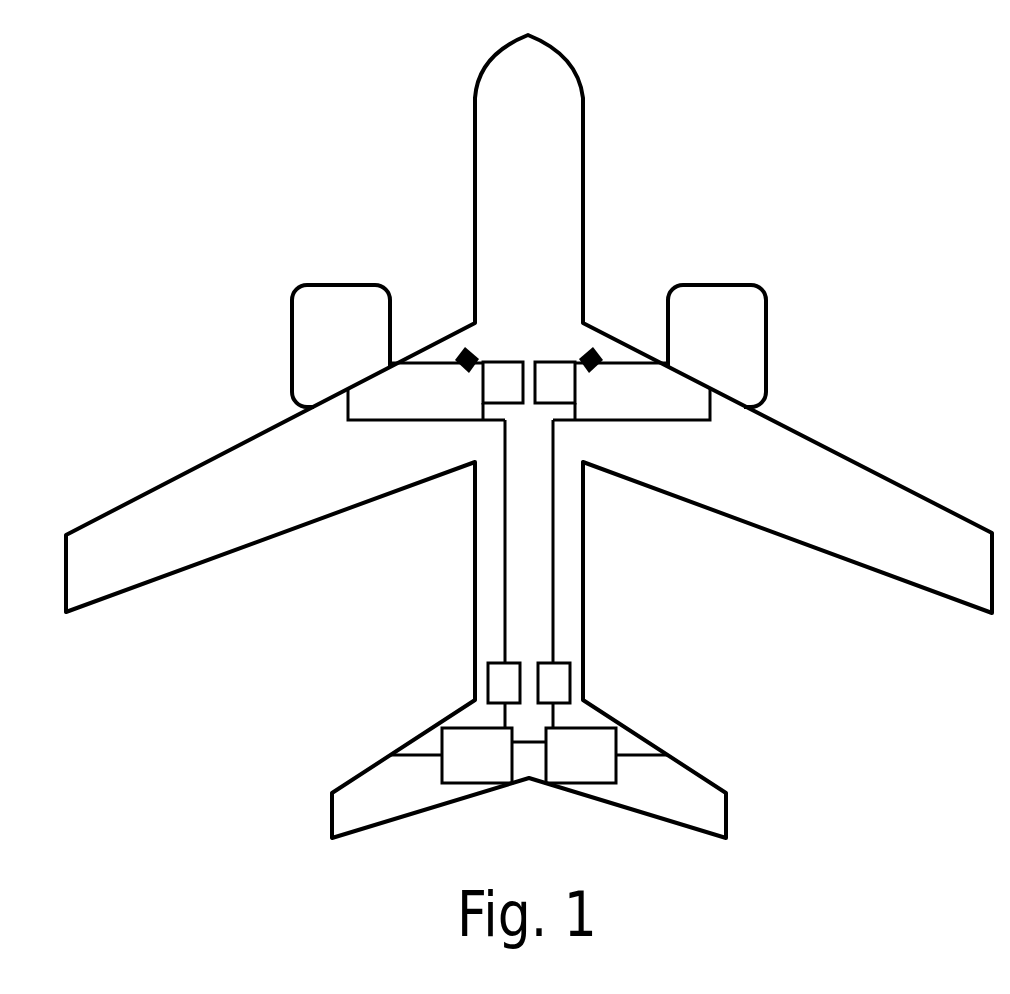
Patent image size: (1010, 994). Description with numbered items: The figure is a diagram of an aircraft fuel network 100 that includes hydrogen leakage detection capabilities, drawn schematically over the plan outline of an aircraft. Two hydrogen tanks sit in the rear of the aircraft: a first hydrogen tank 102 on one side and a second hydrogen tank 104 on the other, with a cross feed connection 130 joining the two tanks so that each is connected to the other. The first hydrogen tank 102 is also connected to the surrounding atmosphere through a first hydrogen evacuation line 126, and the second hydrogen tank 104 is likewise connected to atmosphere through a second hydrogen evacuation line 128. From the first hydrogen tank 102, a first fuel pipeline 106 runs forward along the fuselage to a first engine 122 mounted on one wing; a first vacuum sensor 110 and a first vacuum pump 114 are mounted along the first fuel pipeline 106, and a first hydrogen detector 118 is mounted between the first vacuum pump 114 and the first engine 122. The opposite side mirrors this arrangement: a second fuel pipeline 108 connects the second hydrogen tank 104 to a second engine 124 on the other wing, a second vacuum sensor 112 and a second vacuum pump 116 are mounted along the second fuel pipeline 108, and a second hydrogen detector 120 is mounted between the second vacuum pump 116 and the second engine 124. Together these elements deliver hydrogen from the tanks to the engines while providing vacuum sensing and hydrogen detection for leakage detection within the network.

The aircraft fuel network 100 is at (529, 432).
The first hydrogen tank 102 is at (443, 727).
The second hydrogen tank 104 is at (615, 727).
The first fuel pipeline 106 is at (505, 557).
The second fuel pipeline 108 is at (553, 557).
The first vacuum sensor 110 is at (488, 670).
The second vacuum sensor 112 is at (570, 670).
The first vacuum pump 114 is at (500, 362).
The second vacuum pump 116 is at (558, 362).
The first hydrogen detector 118 is at (461, 346).
The second hydrogen detector 120 is at (597, 346).
The first engine 122 is at (290, 332).
The second engine 124 is at (770, 332).
The first hydrogen evacuation line 126 is at (400, 752).
The second hydrogen evacuation line 128 is at (657, 752).
The cross feed connection 130 is at (533, 743).